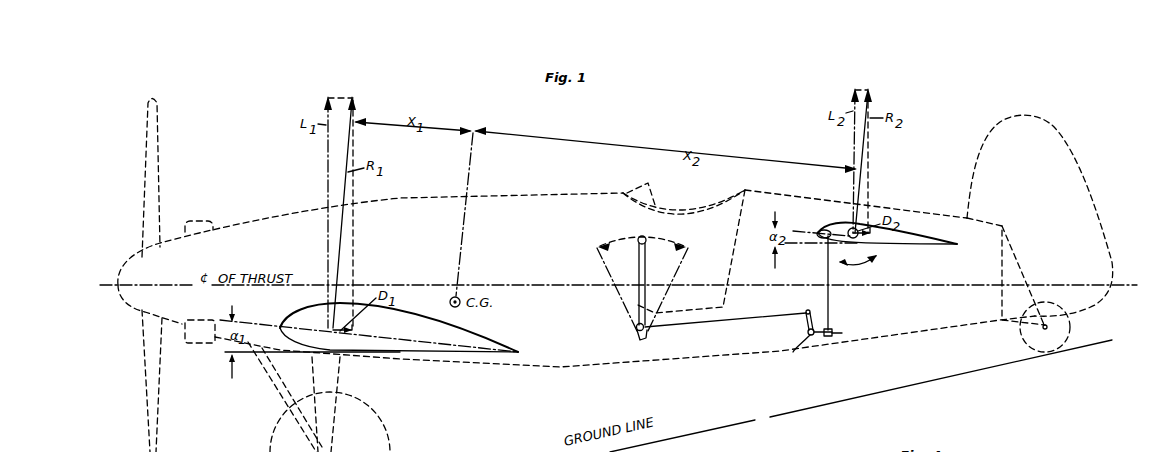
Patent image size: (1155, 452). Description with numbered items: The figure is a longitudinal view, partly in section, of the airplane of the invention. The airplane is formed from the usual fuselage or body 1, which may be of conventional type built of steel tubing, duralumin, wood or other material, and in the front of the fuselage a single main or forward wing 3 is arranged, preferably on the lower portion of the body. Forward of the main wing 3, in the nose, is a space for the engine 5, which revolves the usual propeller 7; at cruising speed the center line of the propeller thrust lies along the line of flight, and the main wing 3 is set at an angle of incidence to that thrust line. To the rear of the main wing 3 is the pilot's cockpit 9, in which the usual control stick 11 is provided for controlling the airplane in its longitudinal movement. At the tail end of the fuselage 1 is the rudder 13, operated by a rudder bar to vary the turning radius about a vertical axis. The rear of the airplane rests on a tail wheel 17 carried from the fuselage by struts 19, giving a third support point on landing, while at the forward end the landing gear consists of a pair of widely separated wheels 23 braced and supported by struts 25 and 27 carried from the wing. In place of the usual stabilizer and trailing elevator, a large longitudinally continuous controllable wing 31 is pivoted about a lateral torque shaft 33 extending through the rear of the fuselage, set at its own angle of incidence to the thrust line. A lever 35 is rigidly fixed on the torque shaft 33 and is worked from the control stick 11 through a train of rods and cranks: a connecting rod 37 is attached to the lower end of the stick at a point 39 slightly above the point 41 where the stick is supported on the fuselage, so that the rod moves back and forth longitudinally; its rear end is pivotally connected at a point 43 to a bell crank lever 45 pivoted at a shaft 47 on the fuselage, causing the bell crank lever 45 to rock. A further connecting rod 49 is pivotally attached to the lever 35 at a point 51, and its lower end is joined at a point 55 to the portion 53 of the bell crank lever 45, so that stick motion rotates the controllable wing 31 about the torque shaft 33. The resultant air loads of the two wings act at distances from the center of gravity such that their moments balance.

The fuselage 1 is at (541, 200).
The main wing 3 is at (410, 328).
The engine 5 is at (200, 222).
The propeller 7 is at (159, 142).
The cockpit 9 is at (690, 220).
The control stick 11 is at (638, 259).
The rudder 13 is at (1092, 196).
The tail wheel 17 is at (1072, 326).
The struts 19 is at (1025, 276).
The wheels 23 is at (380, 451).
The strut 25 is at (286, 394).
The strut 27 is at (341, 405).
The controllable wing 31 is at (918, 240).
The torque shaft 33 is at (858, 256).
The lever 35 is at (848, 229).
The connecting rod 37 is at (738, 320).
The point 39 is at (634, 328).
The point 41 is at (641, 340).
The point 43 is at (809, 311).
The bell crank lever 45 is at (830, 320).
The shaft 47 is at (800, 346).
The connecting rod 49 is at (826, 274).
The point 51 is at (820, 230).
The portion 53 is at (834, 331).
The point 55 is at (828, 338).